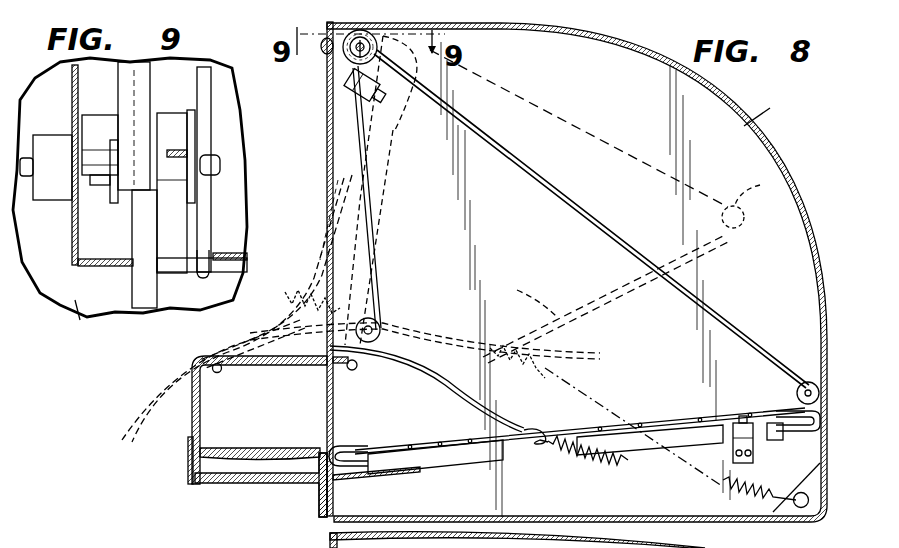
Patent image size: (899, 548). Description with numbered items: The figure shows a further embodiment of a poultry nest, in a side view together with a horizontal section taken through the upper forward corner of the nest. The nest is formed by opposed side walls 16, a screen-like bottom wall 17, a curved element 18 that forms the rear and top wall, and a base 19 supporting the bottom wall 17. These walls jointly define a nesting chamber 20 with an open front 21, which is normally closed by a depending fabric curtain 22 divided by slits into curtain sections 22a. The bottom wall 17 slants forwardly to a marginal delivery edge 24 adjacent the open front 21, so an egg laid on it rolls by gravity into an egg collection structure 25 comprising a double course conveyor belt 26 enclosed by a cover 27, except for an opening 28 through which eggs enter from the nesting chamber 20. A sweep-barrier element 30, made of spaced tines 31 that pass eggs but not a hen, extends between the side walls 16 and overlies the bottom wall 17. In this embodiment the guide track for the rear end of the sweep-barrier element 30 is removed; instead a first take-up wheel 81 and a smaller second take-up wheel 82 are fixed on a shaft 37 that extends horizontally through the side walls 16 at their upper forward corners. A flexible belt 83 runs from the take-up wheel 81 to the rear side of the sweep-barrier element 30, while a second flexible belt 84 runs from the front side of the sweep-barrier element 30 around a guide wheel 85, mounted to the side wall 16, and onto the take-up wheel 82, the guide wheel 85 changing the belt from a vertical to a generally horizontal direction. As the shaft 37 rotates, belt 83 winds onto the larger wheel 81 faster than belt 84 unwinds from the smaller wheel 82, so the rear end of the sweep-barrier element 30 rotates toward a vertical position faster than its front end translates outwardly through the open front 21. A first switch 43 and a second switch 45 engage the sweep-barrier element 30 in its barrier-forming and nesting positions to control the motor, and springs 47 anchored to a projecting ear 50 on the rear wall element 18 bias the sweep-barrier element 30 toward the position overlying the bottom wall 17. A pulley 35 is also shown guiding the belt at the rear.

In FIG. 9, the side walls 16 is at (72, 230).
In FIG. 8, the side walls 16 is at (769, 105).
In FIG. 8, the bottom wall 17 is at (490, 462).
In FIG. 8, the curved element 18 is at (752, 108).
In FIG. 8, the base 19 is at (374, 512).
In FIG. 8, the nesting chamber 20 is at (742, 167).
In FIG. 8, the open front 21 is at (315, 239).
In FIG. 8, the fabric curtain 22 is at (327, 208).
In FIG. 8, the curtain section 22a is at (322, 170).
In FIG. 8, the marginal delivery edge 24 is at (340, 452).
In FIG. 9, the egg collection structure 25 is at (143, 310).
In FIG. 8, the egg collection structure 25 is at (190, 430).
In FIG. 8, the conveyor belt 26 is at (232, 466).
In FIG. 9, the cover 27 is at (137, 285).
In FIG. 8, the cover 27 is at (233, 360).
In FIG. 8, the opening 28 is at (322, 393).
In FIG. 9, the sweep-barrier element 30 is at (195, 278).
In FIG. 8, the sweep-barrier element 30 is at (383, 128).
In FIG. 8, the tines 31 is at (518, 432).
In FIG. 8, the pulley 35 is at (806, 382).
In FIG. 9, the shaft 37 is at (218, 165).
In FIG. 8, the shaft 37 is at (358, 60).
In FIG. 8, the first switch 43 is at (360, 90).
In FIG. 8, the second switch 45 is at (753, 432).
In FIG. 8, the spring 47 is at (342, 308).
In FIG. 8, the projecting ear 50 is at (803, 508).
In FIG. 9, the first take-up wheel 81 is at (113, 205).
In FIG. 8, the first take-up wheel 81 is at (366, 30).
In FIG. 9, the second take-up wheel 82 is at (197, 150).
In FIG. 8, the second take-up wheel 82 is at (352, 50).
In FIG. 9, the flexible belt 83 is at (134, 90).
In FIG. 8, the flexible belt 83 is at (490, 130).
In FIG. 9, the second flexible belt 84 is at (177, 222).
In FIG. 8, the second flexible belt 84 is at (375, 238).
In FIG. 9, the guide wheel 85 is at (98, 118).
In FIG. 8, the guide wheel 85 is at (380, 323).